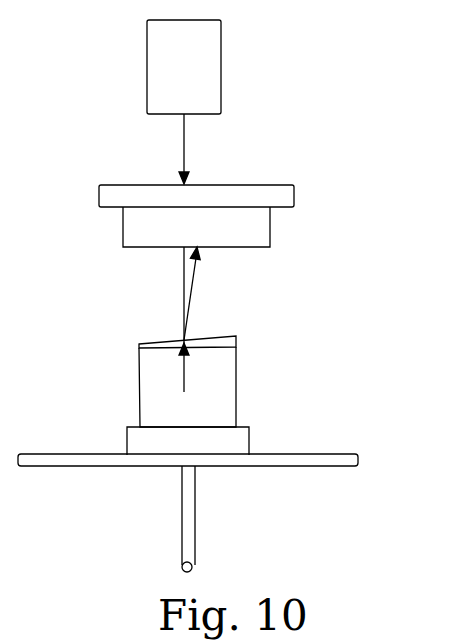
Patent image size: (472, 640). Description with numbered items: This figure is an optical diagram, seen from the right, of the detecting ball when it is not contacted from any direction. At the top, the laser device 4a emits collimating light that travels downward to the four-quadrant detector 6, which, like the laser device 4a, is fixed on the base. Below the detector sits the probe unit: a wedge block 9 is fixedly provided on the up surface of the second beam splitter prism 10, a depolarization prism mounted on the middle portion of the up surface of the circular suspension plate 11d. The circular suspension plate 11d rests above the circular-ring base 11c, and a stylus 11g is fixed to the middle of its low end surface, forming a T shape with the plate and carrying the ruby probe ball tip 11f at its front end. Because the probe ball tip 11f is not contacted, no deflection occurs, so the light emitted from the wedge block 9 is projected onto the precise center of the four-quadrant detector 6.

The laser device 4a is at (208, 44).
The four-quadrant detector 6 is at (255, 217).
The wedge block 9 is at (230, 341).
The second beam splitter prism 10 is at (215, 381).
The circular suspension plate 11d is at (231, 434).
The circular-ring base 11c is at (332, 457).
The stylus 11g is at (195, 512).
The probe ball tip 11f is at (192, 565).